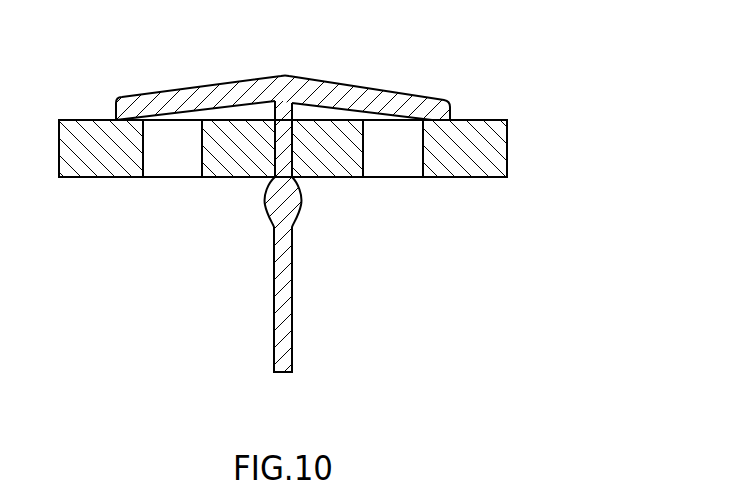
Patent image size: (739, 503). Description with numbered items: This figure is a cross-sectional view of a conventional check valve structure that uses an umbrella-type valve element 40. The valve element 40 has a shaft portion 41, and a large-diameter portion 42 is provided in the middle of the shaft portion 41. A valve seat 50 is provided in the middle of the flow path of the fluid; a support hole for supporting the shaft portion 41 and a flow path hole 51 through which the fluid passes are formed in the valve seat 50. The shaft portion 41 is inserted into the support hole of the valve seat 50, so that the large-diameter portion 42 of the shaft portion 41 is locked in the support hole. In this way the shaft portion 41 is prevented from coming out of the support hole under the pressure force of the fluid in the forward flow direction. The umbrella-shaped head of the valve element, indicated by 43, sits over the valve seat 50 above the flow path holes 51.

The umbrella-type valve element 40 is at (421, 95).
The shaft portion 41 is at (287, 303).
The large-diameter portion 42 is at (282, 200).
The head portion 43 is at (383, 88).
The valve seat 50 is at (507, 160).
The flow path hole 51 is at (170, 165).